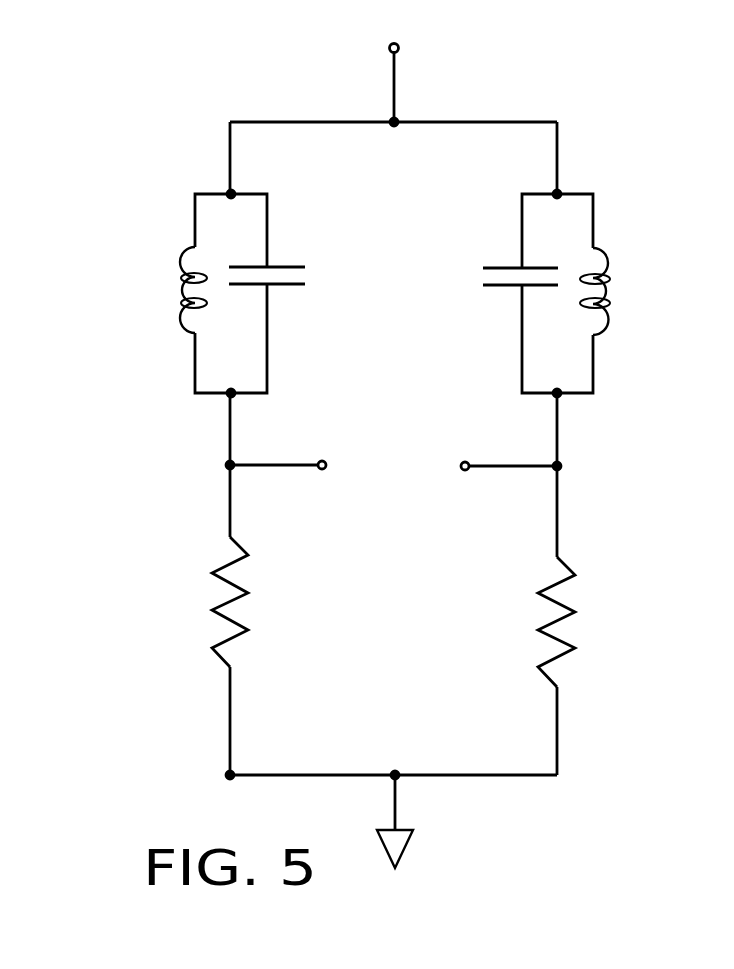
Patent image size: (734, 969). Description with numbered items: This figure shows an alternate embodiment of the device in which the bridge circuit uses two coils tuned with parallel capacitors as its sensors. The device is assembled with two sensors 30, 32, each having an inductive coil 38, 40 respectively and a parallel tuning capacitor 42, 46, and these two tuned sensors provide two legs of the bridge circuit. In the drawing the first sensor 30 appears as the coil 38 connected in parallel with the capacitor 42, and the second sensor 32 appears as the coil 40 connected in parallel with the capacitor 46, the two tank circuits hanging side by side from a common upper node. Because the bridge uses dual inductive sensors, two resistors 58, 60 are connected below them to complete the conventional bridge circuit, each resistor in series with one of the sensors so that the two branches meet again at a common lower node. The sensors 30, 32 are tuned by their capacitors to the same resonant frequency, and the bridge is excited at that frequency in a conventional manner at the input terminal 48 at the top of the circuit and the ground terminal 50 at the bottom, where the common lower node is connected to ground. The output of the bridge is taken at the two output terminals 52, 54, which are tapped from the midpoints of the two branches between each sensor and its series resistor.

The sensor 30 is at (220, 292).
The sensor 32 is at (625, 297).
The inductive coil 38 is at (175, 293).
The inductive coil 40 is at (581, 293).
The parallel tuning capacitor 42 is at (287, 267).
The parallel tuning capacitor 46 is at (508, 287).
The input terminal 48 is at (394, 85).
The ground terminal 50 is at (396, 808).
The output terminal 52 is at (322, 470).
The output terminal 54 is at (462, 470).
The resistor 58 is at (217, 615).
The resistor 60 is at (567, 622).